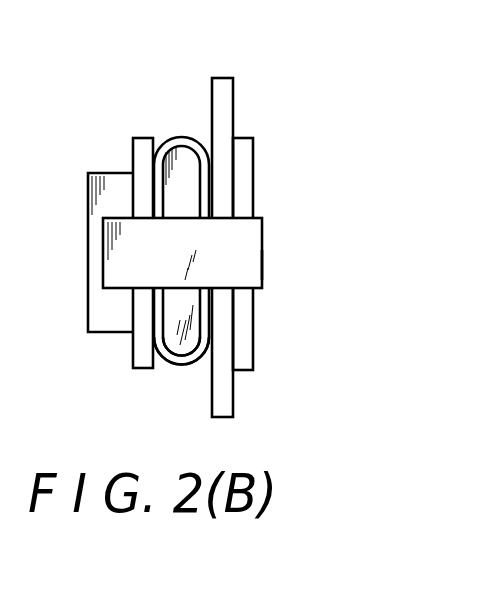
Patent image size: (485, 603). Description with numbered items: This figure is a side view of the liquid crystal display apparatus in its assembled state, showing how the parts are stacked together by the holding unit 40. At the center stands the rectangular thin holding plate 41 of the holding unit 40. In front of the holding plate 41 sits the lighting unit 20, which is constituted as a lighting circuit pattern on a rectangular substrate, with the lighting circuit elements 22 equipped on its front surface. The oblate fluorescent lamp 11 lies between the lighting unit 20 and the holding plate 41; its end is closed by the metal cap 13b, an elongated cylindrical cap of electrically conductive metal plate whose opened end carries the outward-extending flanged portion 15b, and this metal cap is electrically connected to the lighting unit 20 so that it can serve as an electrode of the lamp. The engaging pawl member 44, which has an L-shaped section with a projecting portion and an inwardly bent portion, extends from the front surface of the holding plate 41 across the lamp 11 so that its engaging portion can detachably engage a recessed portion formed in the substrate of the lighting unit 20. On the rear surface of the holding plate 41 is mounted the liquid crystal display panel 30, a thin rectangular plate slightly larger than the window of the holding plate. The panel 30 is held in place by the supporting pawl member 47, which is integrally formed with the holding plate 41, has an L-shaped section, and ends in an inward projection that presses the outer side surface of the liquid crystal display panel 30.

The oblate fluorescent lamp 11 is at (178, 129).
The metal cap 13b is at (172, 362).
The flanged portion 15b is at (188, 364).
The lighting unit 20 is at (121, 165).
The lighting circuit elements 22 is at (93, 200).
The liquid crystal display panel 30 is at (245, 185).
The holding unit 40 is at (219, 70).
The holding plate 41 is at (142, 137).
The engaging pawl member 44 is at (112, 263).
The supporting pawl member 47 is at (255, 270).